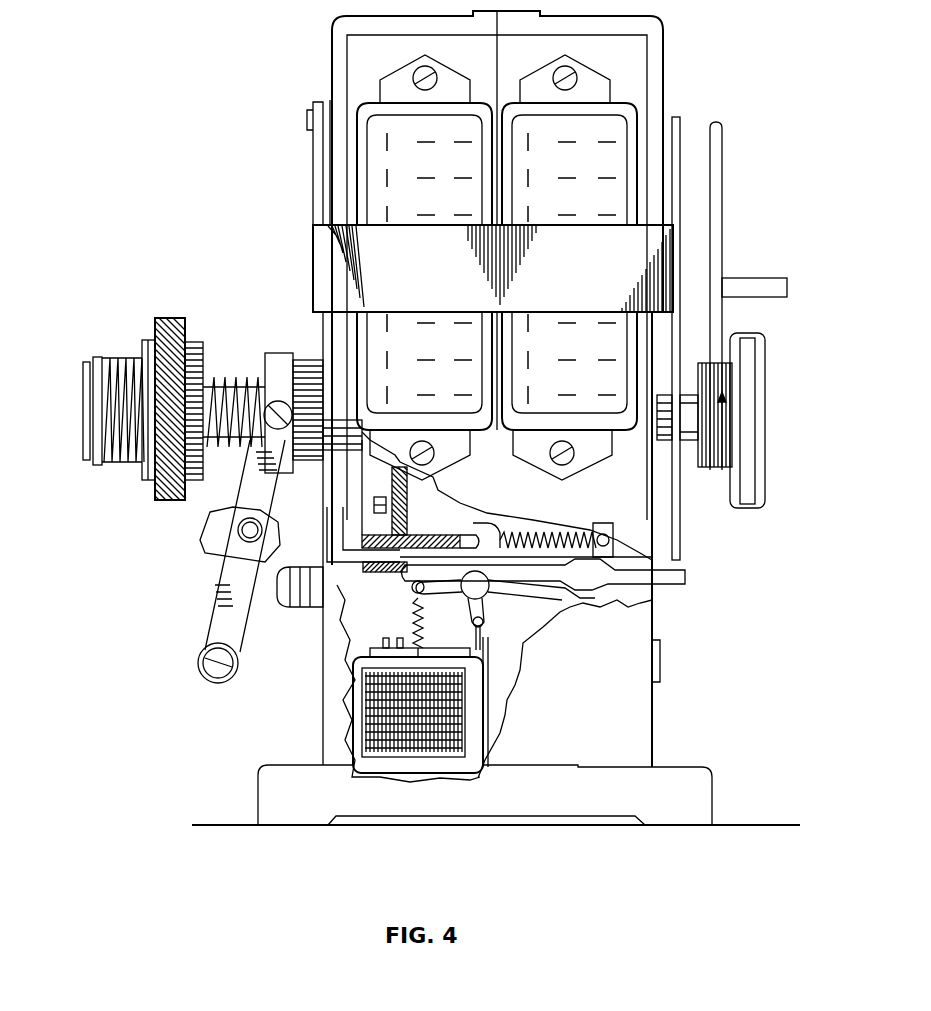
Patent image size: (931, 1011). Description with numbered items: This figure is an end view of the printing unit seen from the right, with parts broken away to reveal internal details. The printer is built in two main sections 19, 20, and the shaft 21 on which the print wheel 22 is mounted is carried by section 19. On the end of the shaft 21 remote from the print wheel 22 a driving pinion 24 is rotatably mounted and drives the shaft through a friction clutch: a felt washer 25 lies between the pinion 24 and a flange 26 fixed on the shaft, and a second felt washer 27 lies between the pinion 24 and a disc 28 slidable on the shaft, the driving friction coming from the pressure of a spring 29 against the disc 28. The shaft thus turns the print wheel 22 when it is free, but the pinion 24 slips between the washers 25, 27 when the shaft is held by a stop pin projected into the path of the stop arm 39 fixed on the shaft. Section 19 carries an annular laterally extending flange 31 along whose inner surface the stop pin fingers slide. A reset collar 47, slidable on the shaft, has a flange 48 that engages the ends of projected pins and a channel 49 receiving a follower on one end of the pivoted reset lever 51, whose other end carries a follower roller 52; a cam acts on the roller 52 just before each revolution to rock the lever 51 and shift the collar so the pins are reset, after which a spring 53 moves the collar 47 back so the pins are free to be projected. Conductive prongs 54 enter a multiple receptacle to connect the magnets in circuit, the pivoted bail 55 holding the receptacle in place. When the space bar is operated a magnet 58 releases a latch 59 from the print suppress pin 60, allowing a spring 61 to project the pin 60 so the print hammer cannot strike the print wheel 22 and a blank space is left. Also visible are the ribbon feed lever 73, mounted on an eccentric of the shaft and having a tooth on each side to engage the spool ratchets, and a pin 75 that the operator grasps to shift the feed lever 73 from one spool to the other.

The main section 19 is at (652, 44).
The main section 20 is at (333, 30).
The shaft 21 is at (676, 445).
The print wheel 22 is at (766, 443).
The driving pinion 24 is at (177, 318).
The felt washer 25 is at (193, 342).
The flange 26 is at (205, 358).
The felt washer 27 is at (157, 333).
The disc 28 is at (147, 348).
The spring 29 is at (117, 358).
The annular laterally extending flange 31 is at (437, 533).
The stop arm 39 is at (681, 538).
The reset collar 47 is at (320, 363).
The flange 48 is at (365, 480).
The channel 49 is at (278, 360).
The reset lever 51 is at (220, 540).
The follower roller 52 is at (237, 667).
The spring 53 is at (227, 380).
The conductive prongs 54 is at (427, 177).
The pivoted bail 55 is at (493, 268).
The magnet 58 is at (390, 697).
The latch 59 is at (500, 597).
The print suppress pin 60 is at (600, 576).
The spring 61 is at (548, 528).
The feed lever 73 is at (717, 263).
The pin 75 is at (772, 283).